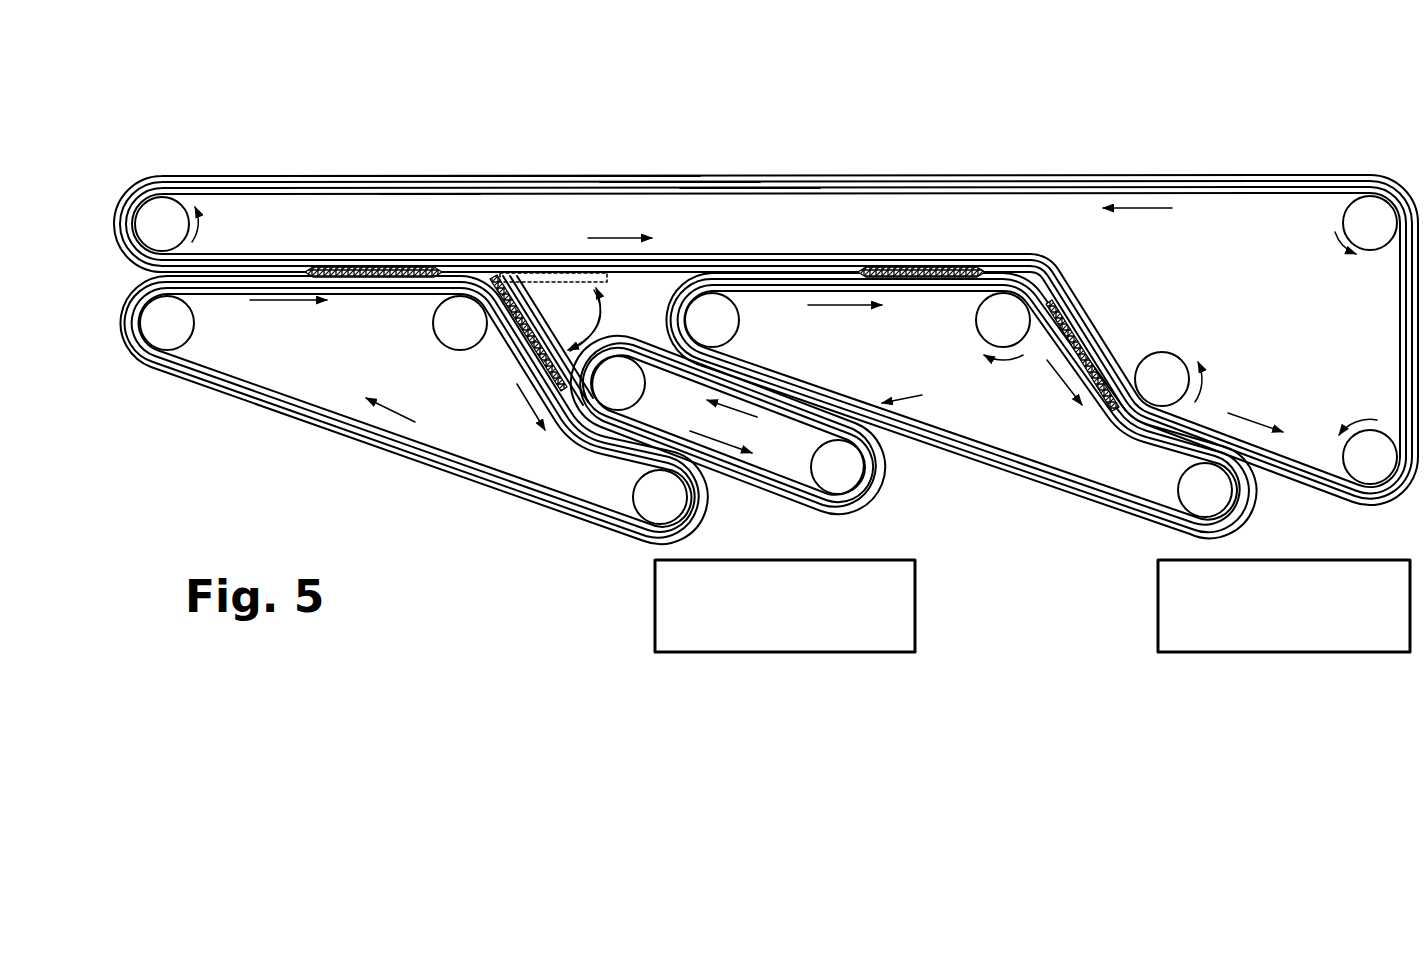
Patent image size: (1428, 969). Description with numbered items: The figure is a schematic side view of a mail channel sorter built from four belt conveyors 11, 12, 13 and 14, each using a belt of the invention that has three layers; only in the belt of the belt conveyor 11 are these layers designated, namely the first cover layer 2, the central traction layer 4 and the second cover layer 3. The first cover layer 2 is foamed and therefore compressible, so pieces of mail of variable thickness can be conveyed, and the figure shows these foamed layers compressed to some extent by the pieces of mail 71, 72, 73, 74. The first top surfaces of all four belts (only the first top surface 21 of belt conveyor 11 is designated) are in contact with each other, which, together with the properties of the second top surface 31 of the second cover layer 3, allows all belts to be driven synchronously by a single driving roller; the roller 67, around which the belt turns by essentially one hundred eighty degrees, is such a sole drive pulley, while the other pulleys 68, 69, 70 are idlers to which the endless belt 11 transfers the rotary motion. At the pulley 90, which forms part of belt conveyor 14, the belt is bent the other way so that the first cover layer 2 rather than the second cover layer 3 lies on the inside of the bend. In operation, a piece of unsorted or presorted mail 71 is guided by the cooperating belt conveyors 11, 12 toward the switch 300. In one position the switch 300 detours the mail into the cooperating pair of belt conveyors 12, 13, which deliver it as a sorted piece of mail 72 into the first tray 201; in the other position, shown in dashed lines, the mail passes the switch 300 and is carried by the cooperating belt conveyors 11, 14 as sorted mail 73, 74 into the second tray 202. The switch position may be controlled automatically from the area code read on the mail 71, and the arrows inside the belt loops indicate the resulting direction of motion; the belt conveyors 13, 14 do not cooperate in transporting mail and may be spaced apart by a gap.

The belt conveyor 11 is at (1060, 160).
The belt conveyor 12 is at (312, 437).
The belt conveyor 13 is at (903, 476).
The belt conveyor 14 is at (1268, 488).
The first cover layer 2 is at (583, 176).
The second cover layer 3 is at (723, 190).
The central traction layer 4 is at (643, 182).
The first top surface 21 is at (336, 176).
The second top surface 31 is at (400, 197).
The drive pulley 67 is at (163, 217).
The idler pulley 68 is at (1356, 225).
The idler pulley 69 is at (1165, 378).
The idler pulley 70 is at (1355, 455).
The unsorted or presorted mail 71 is at (376, 277).
The sorted piece of mail 72 is at (543, 363).
The sorted mail 73 is at (913, 266).
The sorted mail 74 is at (1088, 325).
The pulley 90 is at (973, 328).
The switch 300 is at (579, 273).
The first tray 201 is at (780, 627).
The second tray 202 is at (1295, 630).